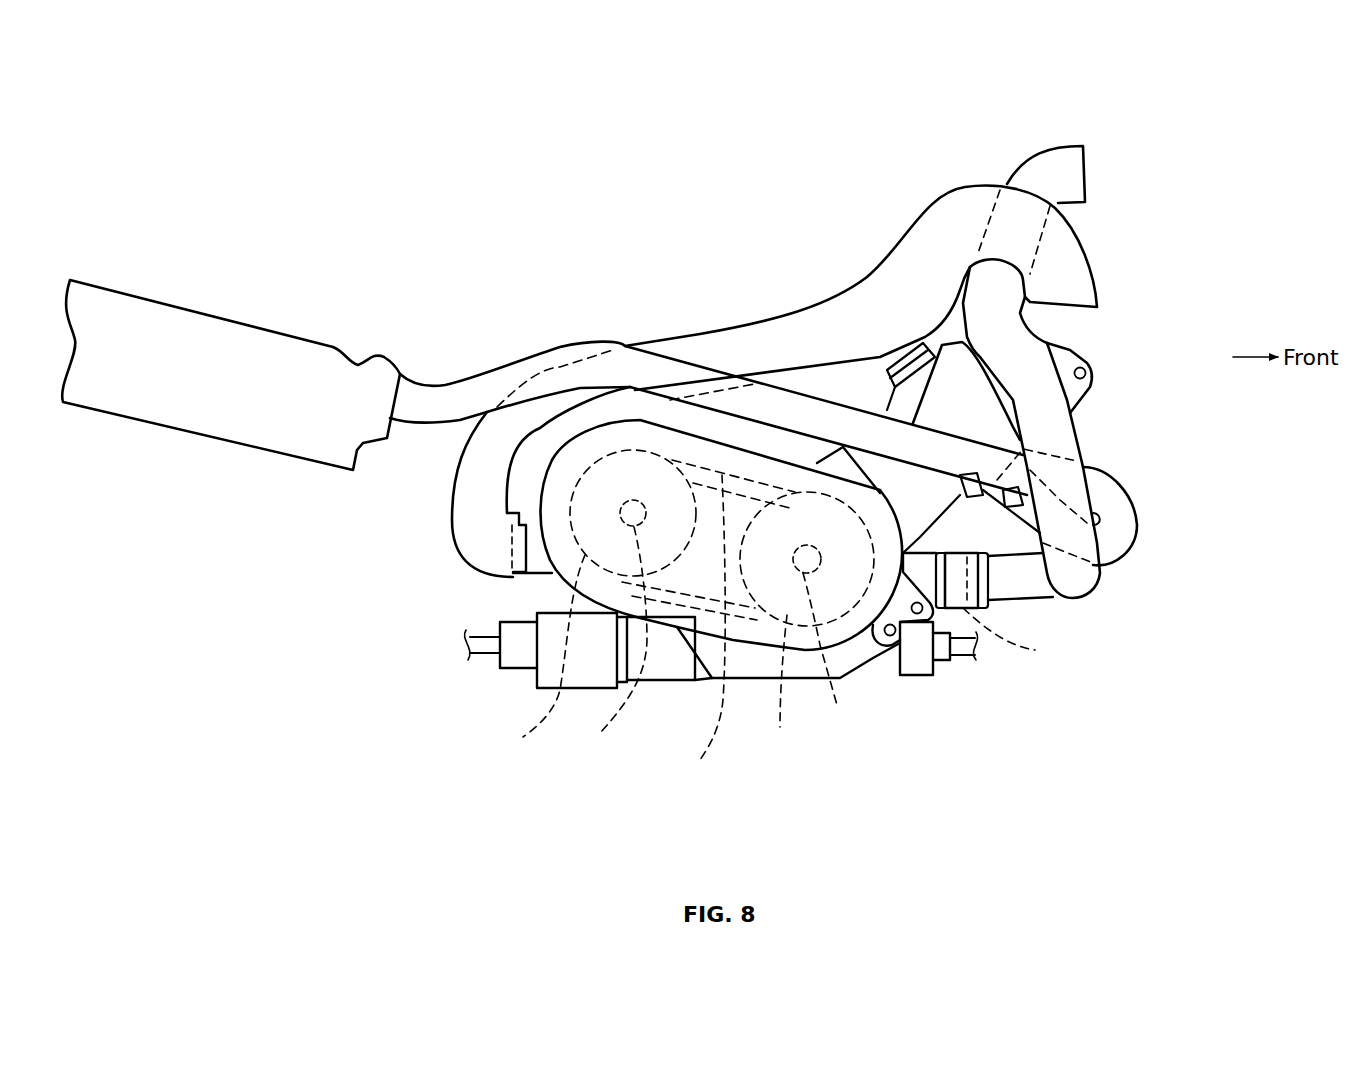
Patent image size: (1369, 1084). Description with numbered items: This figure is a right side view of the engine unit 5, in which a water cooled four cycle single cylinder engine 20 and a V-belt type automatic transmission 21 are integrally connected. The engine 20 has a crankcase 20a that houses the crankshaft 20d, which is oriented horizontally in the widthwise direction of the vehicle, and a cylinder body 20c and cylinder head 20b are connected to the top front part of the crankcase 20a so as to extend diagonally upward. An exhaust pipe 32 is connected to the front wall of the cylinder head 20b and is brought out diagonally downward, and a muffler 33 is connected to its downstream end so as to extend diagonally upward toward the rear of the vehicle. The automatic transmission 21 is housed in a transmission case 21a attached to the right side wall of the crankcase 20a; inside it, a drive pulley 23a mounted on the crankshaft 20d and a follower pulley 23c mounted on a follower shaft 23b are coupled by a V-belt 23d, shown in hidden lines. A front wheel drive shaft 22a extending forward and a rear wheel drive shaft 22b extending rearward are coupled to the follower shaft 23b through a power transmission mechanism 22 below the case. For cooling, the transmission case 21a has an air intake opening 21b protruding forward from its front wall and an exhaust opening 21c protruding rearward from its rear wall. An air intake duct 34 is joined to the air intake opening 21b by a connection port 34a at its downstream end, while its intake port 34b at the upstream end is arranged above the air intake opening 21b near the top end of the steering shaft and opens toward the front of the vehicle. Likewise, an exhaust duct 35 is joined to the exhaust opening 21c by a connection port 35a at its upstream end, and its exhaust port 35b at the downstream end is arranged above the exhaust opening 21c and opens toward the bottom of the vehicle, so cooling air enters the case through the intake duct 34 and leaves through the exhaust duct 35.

The engine unit 5 is at (817, 460).
The engine 20 is at (953, 340).
The crankcase 20a is at (866, 390).
The cylinder head 20b is at (906, 398).
The cylinder body 20c is at (878, 490).
The crankshaft 20d is at (833, 654).
The automatic transmission 21 is at (712, 432).
The transmission case 21a is at (637, 415).
The air intake opening 21b is at (923, 557).
The exhaust opening 21c is at (543, 575).
The power transmission mechanism 22 is at (673, 689).
The front wheel drive shaft 22a is at (962, 660).
The rear wheel drive shaft 22b is at (488, 655).
The drive pulley 23a is at (772, 686).
The follower shaft 23b is at (612, 643).
The follower pulley 23c is at (544, 660).
The V-belt 23d is at (704, 630).
The exhaust pipe 32 is at (1120, 483).
The muffler 33 is at (204, 316).
The air intake duct 34 is at (1080, 433).
The connection port 34a is at (1015, 640).
The intake port 34b is at (1087, 158).
The exhaust duct 35 is at (733, 328).
The connection port 35a is at (526, 578).
The exhaust port 35b is at (1077, 310).